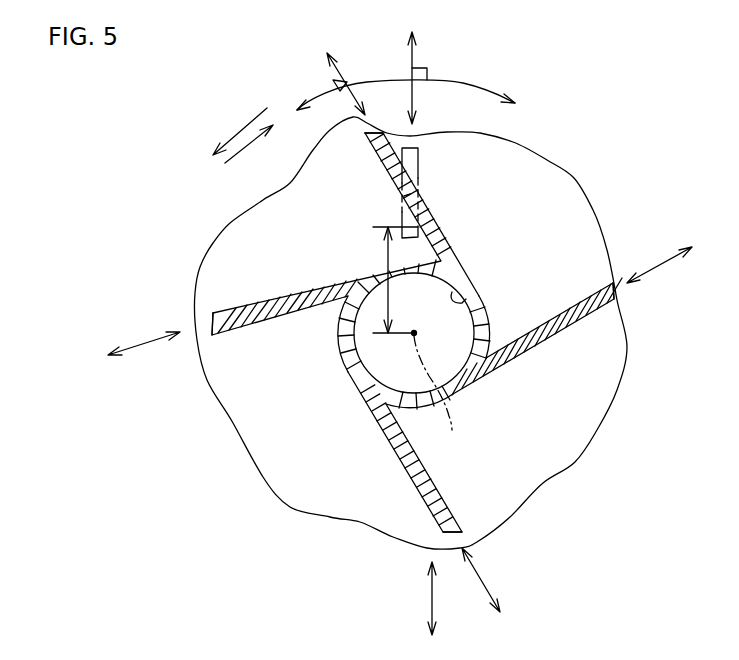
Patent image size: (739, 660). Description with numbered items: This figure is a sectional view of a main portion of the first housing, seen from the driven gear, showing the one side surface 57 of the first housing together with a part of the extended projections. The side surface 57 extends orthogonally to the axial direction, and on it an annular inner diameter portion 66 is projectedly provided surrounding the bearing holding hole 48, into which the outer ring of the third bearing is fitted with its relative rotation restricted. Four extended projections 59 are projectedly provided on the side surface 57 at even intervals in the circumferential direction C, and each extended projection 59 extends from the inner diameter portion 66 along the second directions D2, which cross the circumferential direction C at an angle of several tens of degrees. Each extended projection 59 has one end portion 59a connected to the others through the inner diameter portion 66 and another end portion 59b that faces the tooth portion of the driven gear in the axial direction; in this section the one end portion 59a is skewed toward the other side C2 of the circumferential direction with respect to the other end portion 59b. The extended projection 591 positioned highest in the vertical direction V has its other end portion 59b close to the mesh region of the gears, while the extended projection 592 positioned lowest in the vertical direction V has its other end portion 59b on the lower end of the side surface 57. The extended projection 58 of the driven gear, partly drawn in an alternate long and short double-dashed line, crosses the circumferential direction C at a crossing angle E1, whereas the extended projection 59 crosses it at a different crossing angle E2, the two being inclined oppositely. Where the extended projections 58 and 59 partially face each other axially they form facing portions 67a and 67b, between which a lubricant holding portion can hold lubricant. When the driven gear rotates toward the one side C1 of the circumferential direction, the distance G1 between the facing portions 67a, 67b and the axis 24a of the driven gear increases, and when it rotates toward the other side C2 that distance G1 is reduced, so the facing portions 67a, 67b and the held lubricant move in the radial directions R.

The one side surface 57 is at (570, 175).
The annular inner diameter portion 66 is at (483, 310).
The bearing holding hole 48 is at (497, 296).
The extended projection positioned highest 591 is at (428, 214).
The extended projection positioned lowest 592 is at (404, 465).
The extended projection 59 is at (268, 318).
The one end portion 59a is at (346, 281).
The other end portion 59b is at (407, 135).
The extended projection 58 is at (422, 162).
The facing portion 67a is at (407, 195).
The facing portion 67b is at (407, 195).
The axis of the driven gear 24a is at (460, 394).
The distance G1 is at (400, 280).
The radial directions R is at (413, 62).
The crossing angle E1 is at (427, 77).
The circumferential direction C is at (327, 97).
The crossing angle E2 is at (338, 83).
The second directions D2 is at (347, 90).
The one side of the circumferential direction C1 is at (240, 130).
The other side of the circumferential direction C2 is at (243, 143).
The vertical direction V is at (432, 593).